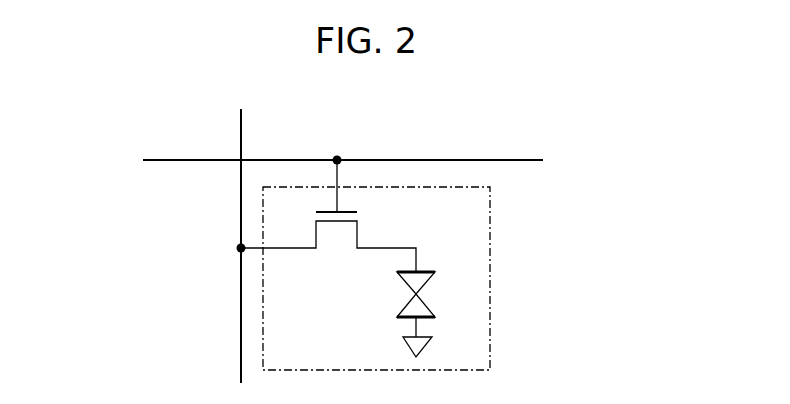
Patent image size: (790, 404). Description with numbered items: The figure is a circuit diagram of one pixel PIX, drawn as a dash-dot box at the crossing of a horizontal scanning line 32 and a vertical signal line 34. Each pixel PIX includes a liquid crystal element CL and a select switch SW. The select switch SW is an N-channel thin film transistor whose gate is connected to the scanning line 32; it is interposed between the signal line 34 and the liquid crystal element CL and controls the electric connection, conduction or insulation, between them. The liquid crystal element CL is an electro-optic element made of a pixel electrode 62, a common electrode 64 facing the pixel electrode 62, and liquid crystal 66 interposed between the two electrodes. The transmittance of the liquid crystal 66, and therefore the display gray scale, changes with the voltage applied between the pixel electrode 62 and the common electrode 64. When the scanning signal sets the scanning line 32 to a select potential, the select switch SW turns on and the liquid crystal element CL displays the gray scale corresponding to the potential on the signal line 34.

The scanning line 32 is at (187, 160).
The signal line 34 is at (241, 298).
The pixel PIX is at (490, 211).
The select switch SW is at (337, 230).
The liquid crystal element CL is at (483, 294).
The pixel electrode 62 is at (437, 271).
The liquid crystal 66 is at (421, 293).
The common electrode 64 is at (463, 316).